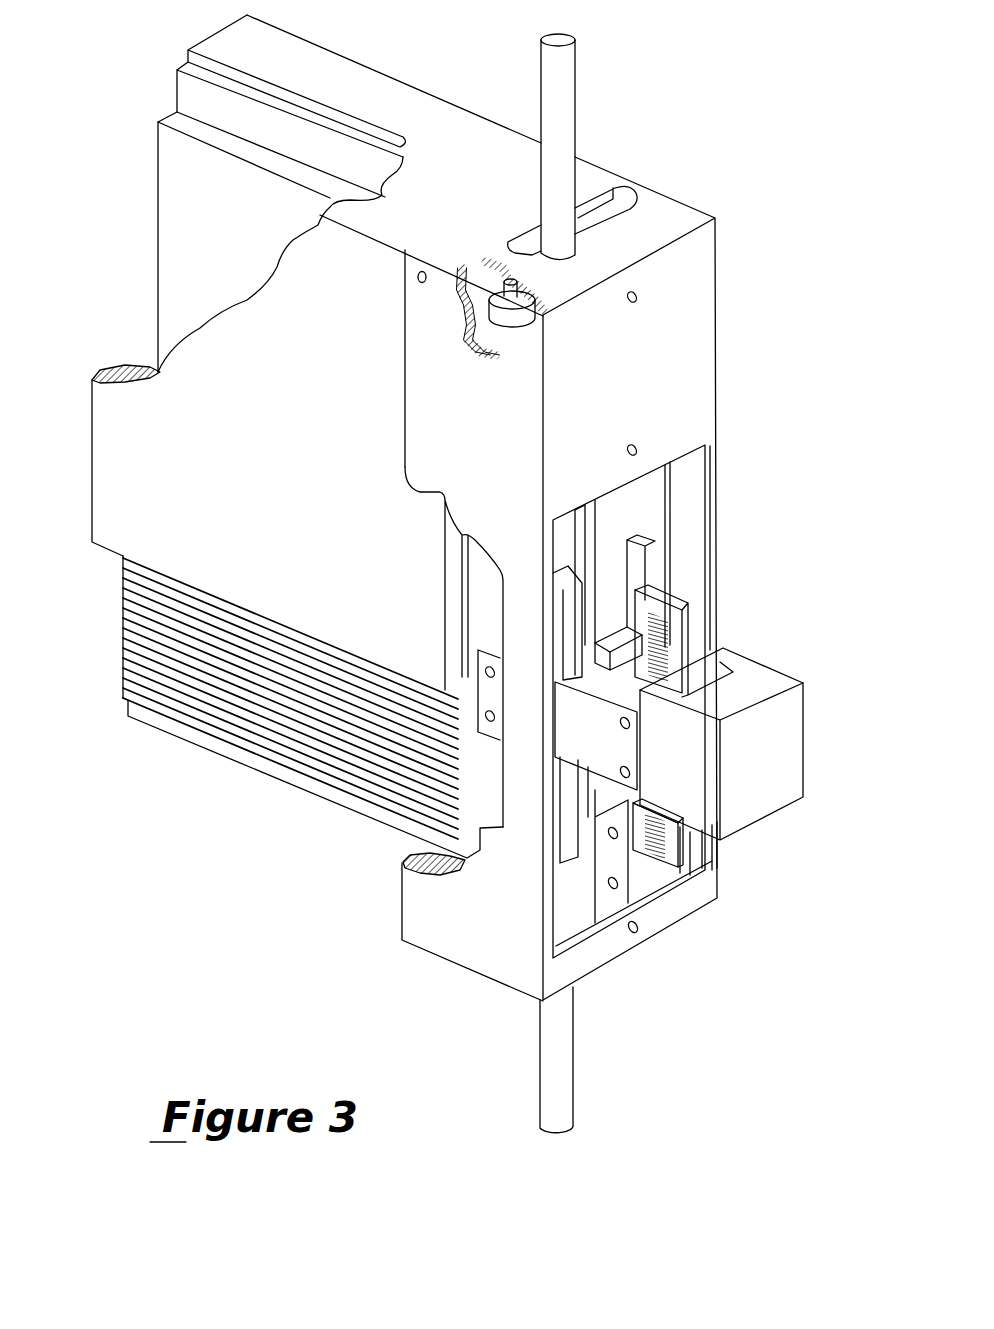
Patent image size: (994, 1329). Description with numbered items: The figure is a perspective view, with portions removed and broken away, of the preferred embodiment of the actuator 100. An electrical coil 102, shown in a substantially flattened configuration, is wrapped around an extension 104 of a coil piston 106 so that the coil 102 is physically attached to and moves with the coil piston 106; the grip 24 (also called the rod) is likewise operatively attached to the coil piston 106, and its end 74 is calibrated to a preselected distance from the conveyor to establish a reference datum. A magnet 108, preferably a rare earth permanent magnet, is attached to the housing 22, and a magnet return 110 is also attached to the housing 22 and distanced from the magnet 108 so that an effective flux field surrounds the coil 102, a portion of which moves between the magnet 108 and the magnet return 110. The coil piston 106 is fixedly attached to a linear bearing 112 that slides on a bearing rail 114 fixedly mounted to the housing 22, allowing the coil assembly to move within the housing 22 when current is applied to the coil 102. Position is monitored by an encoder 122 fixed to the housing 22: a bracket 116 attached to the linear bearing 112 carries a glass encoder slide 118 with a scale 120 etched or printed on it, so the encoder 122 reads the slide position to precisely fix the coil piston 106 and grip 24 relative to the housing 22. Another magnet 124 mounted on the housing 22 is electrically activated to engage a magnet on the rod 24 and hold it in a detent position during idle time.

The housing 22 is at (387, 80).
The grip 24 is at (573, 77).
The end of grip 74 is at (560, 1128).
The actuator 100 is at (752, 332).
The electrical coil 102 is at (140, 648).
The extension 104 is at (207, 737).
The coil piston 106 is at (483, 785).
The magnet 108 is at (177, 168).
The magnet return 110 is at (103, 396).
The linear bearing 112 is at (578, 612).
The bearing rail 114 is at (613, 503).
The bracket 116 is at (612, 753).
The glass encoder slide 118 is at (670, 600).
The scale 120 is at (653, 650).
The encoder 122 is at (768, 668).
The magnet 124 is at (513, 320).